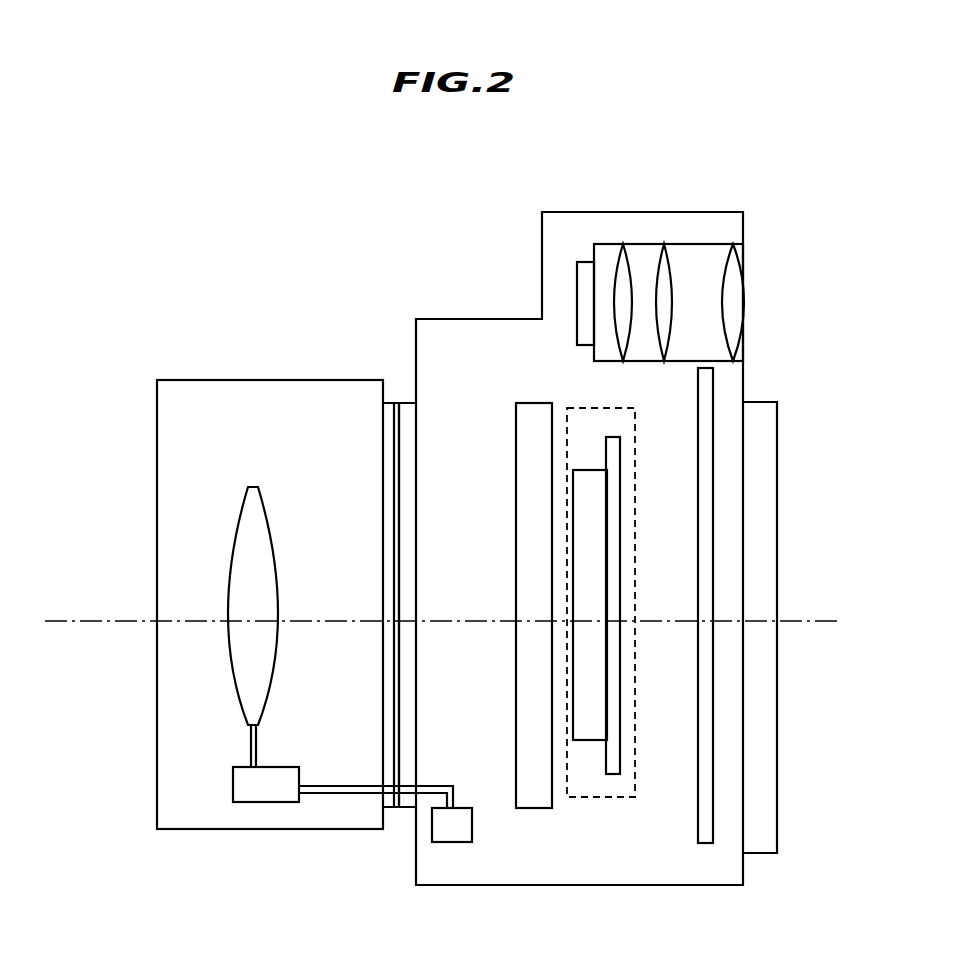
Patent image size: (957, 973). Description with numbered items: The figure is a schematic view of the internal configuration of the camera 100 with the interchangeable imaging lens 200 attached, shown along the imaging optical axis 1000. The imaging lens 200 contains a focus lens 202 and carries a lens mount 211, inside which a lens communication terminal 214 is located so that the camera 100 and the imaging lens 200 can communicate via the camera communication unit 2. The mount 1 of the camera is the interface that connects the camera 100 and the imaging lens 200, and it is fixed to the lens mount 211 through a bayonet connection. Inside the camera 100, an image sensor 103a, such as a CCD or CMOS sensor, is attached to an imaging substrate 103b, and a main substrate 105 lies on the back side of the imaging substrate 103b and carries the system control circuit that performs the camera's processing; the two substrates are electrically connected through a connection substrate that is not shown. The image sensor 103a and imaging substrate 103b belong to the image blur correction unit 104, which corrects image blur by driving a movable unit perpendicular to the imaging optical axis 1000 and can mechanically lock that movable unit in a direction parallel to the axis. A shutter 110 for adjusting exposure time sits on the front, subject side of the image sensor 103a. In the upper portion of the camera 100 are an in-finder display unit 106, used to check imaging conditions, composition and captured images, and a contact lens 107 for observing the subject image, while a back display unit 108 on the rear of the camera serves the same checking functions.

The mount 1 is at (410, 413).
The camera communication unit 2 is at (444, 825).
The camera 100 is at (668, 230).
The image sensor 103a is at (590, 722).
The imaging substrate 103b is at (617, 760).
The image blur correction unit 104 is at (612, 797).
The main substrate 105 is at (707, 395).
The in-finder display unit 106 is at (586, 285).
The contact lens 107 is at (733, 307).
The back display unit 108 is at (762, 542).
The shutter 110 is at (529, 793).
The imaging lens 200 is at (196, 400).
The focus lens 202 is at (260, 485).
The lens mount 211 is at (390, 413).
The lens communication terminal 214 is at (260, 793).
The imaging optical axis 1000 is at (103, 625).